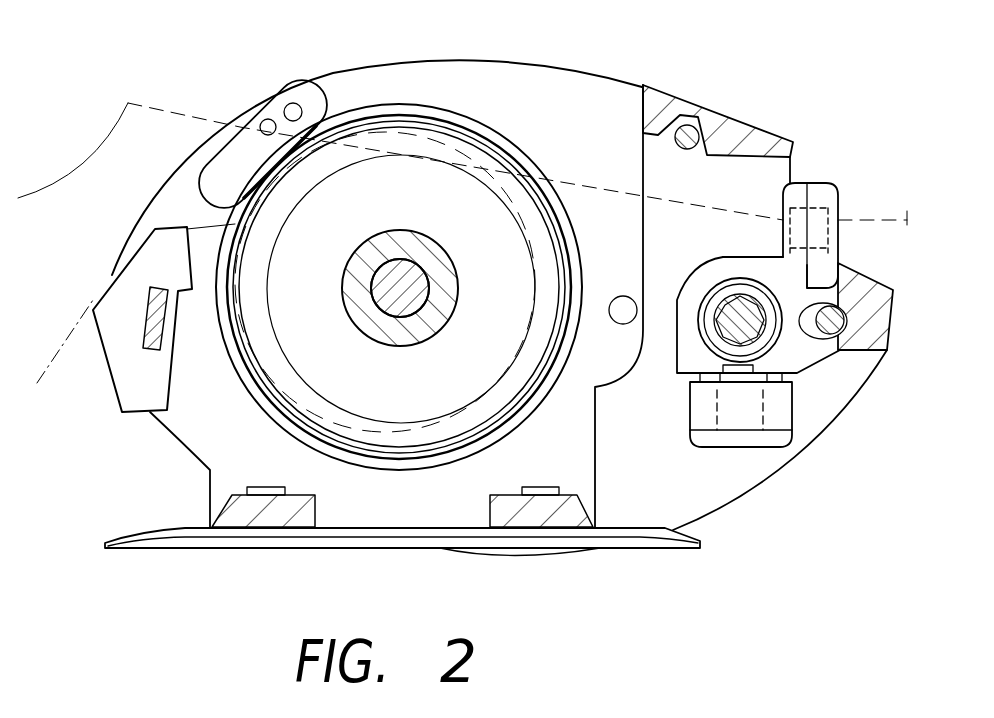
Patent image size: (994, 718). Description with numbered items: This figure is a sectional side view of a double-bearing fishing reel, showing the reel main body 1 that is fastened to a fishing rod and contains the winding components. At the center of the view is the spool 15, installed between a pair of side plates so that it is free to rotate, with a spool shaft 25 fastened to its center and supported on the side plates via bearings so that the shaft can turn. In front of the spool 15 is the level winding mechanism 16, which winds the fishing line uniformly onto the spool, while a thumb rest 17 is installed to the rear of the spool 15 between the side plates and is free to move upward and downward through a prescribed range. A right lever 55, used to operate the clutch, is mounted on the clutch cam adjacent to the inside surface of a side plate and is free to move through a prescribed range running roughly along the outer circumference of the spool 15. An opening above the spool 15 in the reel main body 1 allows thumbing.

The reel main body 1 is at (600, 97).
The spool 15 is at (447, 253).
The level winding mechanism 16 is at (831, 177).
The thumb rest 17 is at (113, 303).
The spool shaft 25 is at (410, 307).
The right lever 55 is at (236, 160).